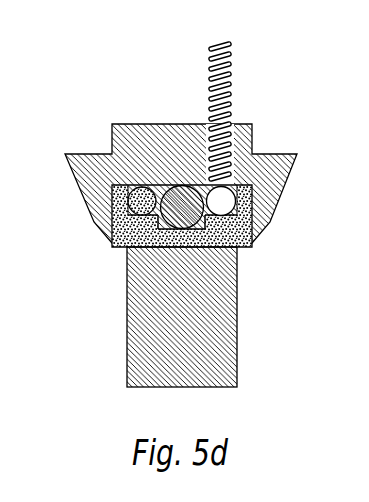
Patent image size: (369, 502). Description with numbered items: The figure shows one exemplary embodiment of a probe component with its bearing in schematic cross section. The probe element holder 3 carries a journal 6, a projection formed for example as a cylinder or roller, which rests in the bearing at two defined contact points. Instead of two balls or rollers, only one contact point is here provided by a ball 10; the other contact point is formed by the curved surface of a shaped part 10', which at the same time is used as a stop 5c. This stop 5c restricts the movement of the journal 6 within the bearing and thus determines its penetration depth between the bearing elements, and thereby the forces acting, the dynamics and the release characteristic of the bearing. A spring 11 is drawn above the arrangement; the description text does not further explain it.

The probe element holder 3 is at (213, 342).
The stop 5c is at (138, 214).
The journal 6 is at (200, 231).
The ball 10 is at (282, 241).
The shaped part 10' is at (87, 246).
The spring 11 is at (228, 60).